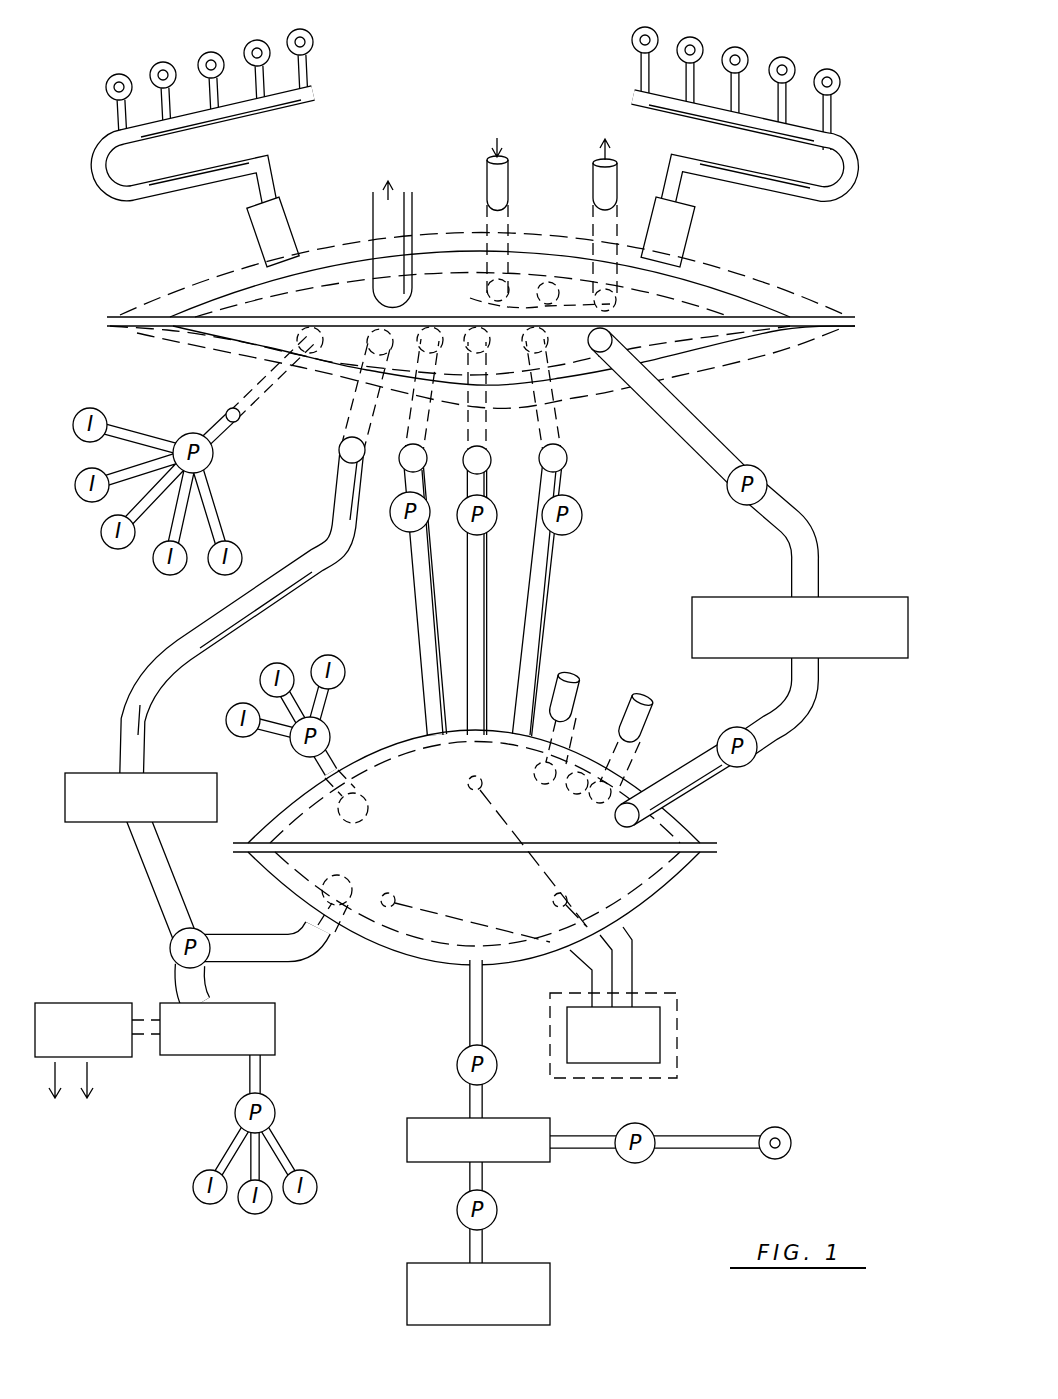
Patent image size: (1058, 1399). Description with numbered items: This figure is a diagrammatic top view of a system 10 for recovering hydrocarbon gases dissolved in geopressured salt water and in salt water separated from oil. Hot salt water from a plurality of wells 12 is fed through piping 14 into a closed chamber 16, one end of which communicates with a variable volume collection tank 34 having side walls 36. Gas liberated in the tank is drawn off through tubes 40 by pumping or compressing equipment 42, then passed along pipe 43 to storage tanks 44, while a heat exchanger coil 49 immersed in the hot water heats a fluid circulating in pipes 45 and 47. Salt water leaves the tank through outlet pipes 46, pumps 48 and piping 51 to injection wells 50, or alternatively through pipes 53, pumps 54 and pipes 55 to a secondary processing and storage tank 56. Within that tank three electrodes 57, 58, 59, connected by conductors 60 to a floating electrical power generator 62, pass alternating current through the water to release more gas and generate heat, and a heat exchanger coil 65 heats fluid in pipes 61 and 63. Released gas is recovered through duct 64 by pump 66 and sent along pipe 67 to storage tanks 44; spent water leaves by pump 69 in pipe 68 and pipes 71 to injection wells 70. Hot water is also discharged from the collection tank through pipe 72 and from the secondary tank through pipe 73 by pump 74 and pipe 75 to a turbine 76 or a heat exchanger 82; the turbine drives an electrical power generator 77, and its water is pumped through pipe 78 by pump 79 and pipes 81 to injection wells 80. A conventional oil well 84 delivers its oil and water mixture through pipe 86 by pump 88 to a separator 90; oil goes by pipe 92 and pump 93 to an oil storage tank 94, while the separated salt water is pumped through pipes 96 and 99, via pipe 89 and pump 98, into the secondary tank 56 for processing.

The system 10 is at (137, 258).
The wells 12 is at (132, 76).
The piping 14 is at (290, 108).
The closed chamber 16 is at (293, 226).
The variable volume collection tank 34 is at (757, 310).
The side walls 36 is at (795, 293).
The tubes 40 is at (373, 215).
The pumping or compressing equipment 42 is at (766, 462).
The conduit 43 is at (797, 511).
The storage tanks 44 is at (890, 597).
The pipe 45 is at (488, 178).
The outlet pipes 46 is at (257, 396).
The pipe 47 is at (594, 188).
The pumps 48 is at (193, 433).
The heat exchanger coil 49 is at (472, 300).
The injection wells 50 is at (78, 478).
The piping 51 is at (150, 437).
The pipes 53 is at (428, 487).
The pumps 54 is at (393, 522).
The conduits 55 is at (467, 618).
The secondary processing and storage tank 56 is at (672, 888).
The electrode 57 is at (468, 788).
The electrode 58 is at (394, 895).
The electrode 59 is at (553, 900).
The conductors 60 is at (612, 972).
The pipe 61 is at (577, 693).
The electrical power generator 62 is at (662, 1022).
The pipe 63 is at (648, 714).
The duct 64 is at (707, 785).
The heat exchanger coil 65 is at (571, 796).
The pump 66 is at (757, 757).
The pipe 67 is at (817, 687).
The pipe 68 is at (338, 754).
The pump 69 is at (297, 755).
The injection wells 70 is at (320, 660).
The pipes 71 is at (322, 708).
The pipe 72 is at (117, 735).
The pipe 73 is at (258, 932).
The pump 74 is at (168, 959).
The pipe 75 is at (215, 987).
The turbine 76 is at (275, 1038).
The electrical power generator 77 is at (120, 1001).
The pipe 78 is at (261, 1078).
The pump 79 is at (277, 1110).
The injection wells 80 is at (243, 1212).
The pipes 81 is at (224, 1152).
The heat exchanger 82 is at (108, 823).
The well 84 is at (793, 1146).
The pipe 86 is at (702, 1149).
The pump 88 is at (638, 1164).
The conduit 89 is at (598, 1149).
The separator 90 is at (533, 1120).
The pipe 92 is at (468, 1183).
The pump 93 is at (460, 1226).
The oil storage tank 94 is at (552, 1299).
The pipe 96 is at (483, 1114).
The pump 98 is at (457, 1079).
The pipe 99 is at (470, 1016).